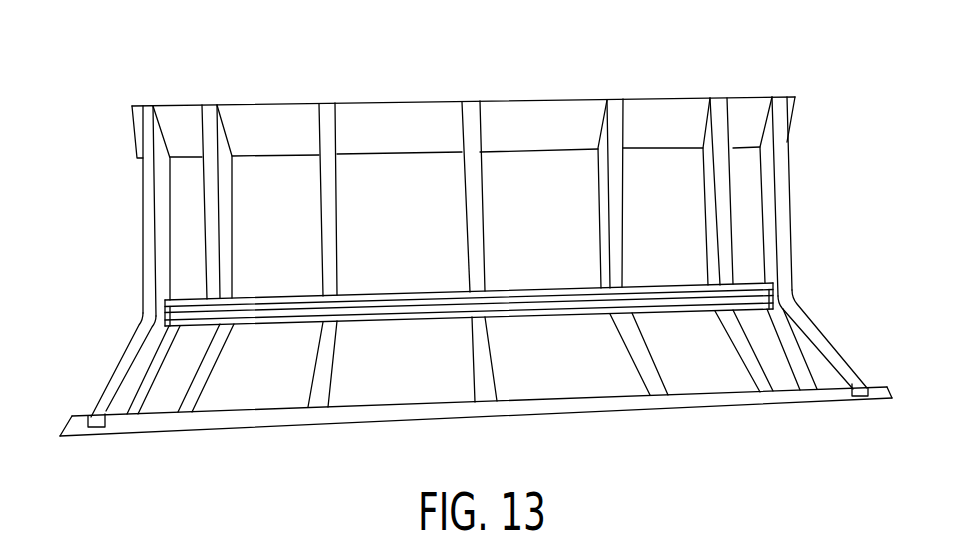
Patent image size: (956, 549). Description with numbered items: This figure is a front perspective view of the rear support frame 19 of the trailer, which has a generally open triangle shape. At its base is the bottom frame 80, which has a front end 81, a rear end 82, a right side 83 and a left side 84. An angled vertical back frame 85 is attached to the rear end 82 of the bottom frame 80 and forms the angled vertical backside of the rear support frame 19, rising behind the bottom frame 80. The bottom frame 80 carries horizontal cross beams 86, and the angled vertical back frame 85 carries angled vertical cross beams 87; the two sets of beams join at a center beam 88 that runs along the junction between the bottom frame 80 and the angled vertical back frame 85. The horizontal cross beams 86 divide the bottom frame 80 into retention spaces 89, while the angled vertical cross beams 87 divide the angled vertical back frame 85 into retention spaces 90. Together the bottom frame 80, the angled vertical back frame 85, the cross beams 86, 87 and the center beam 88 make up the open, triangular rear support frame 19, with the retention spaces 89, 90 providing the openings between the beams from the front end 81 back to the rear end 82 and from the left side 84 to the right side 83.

The rear support frame 19 is at (461, 88).
The angled vertical back frame 85 is at (352, 102).
The retention spaces 90 is at (189, 176).
The angled vertical cross beams 87 is at (150, 213).
The rear end 82 is at (552, 282).
The center beam 88 is at (404, 291).
The horizontal cross beams 86 is at (128, 343).
The bottom frame 80 is at (160, 426).
The retention spaces 89 is at (156, 396).
The front end 81 is at (676, 413).
The left side 84 is at (61, 415).
The right side 83 is at (894, 406).